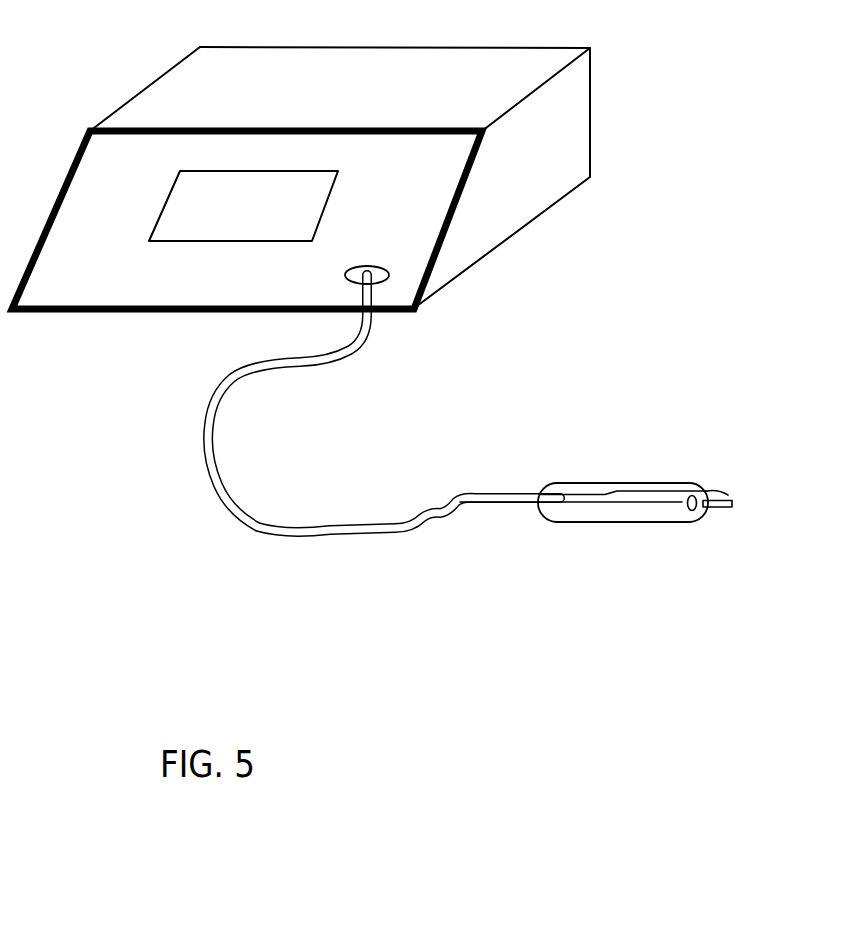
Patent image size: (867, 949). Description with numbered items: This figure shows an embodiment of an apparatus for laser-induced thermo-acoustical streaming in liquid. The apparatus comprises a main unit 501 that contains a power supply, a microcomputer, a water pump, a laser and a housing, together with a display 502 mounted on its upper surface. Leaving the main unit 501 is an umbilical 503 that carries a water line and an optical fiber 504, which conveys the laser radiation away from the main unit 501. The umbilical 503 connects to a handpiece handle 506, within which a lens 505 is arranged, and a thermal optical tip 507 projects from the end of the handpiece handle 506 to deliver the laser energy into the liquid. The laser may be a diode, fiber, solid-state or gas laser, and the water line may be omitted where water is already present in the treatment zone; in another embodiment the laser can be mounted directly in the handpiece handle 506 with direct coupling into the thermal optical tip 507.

The main unit 501 is at (568, 122).
The display 502 is at (218, 190).
The cable 503 is at (493, 492).
The optical fiber 504 is at (478, 506).
The lens 505 is at (687, 518).
The handpiece handle 506 is at (593, 480).
The thermal optical tip 507 is at (728, 511).